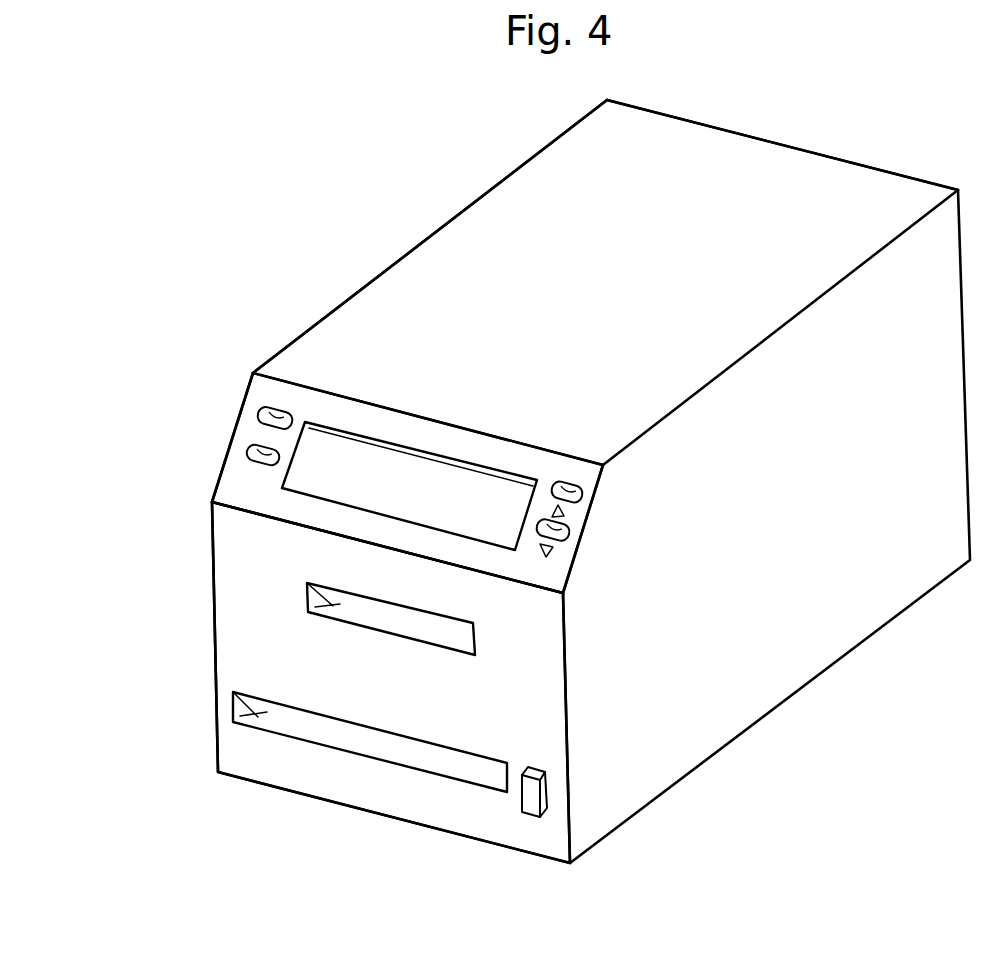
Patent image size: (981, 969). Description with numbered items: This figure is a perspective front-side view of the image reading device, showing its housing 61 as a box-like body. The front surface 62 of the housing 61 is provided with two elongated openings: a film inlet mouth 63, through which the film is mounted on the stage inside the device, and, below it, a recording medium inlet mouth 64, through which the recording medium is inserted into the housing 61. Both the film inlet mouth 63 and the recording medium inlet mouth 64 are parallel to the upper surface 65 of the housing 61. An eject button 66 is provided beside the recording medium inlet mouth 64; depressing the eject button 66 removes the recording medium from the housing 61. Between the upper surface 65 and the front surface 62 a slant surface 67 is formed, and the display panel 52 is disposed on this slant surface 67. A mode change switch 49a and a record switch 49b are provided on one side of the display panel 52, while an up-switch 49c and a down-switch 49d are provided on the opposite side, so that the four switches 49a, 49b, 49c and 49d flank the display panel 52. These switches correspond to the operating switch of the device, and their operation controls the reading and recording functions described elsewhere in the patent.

The housing 61 is at (447, 214).
The upper surface 65 is at (373, 302).
The slant surface 67 is at (380, 420).
The display panel 52 is at (467, 493).
The mode change switch 49a is at (258, 410).
The record switch 49b is at (247, 452).
The up-switch 49c is at (573, 487).
The down-switch 49d is at (563, 523).
The front surface 62 is at (233, 648).
The film inlet mouth 63 is at (307, 607).
The recording medium inlet mouth 64 is at (263, 713).
The eject button 66 is at (530, 800).